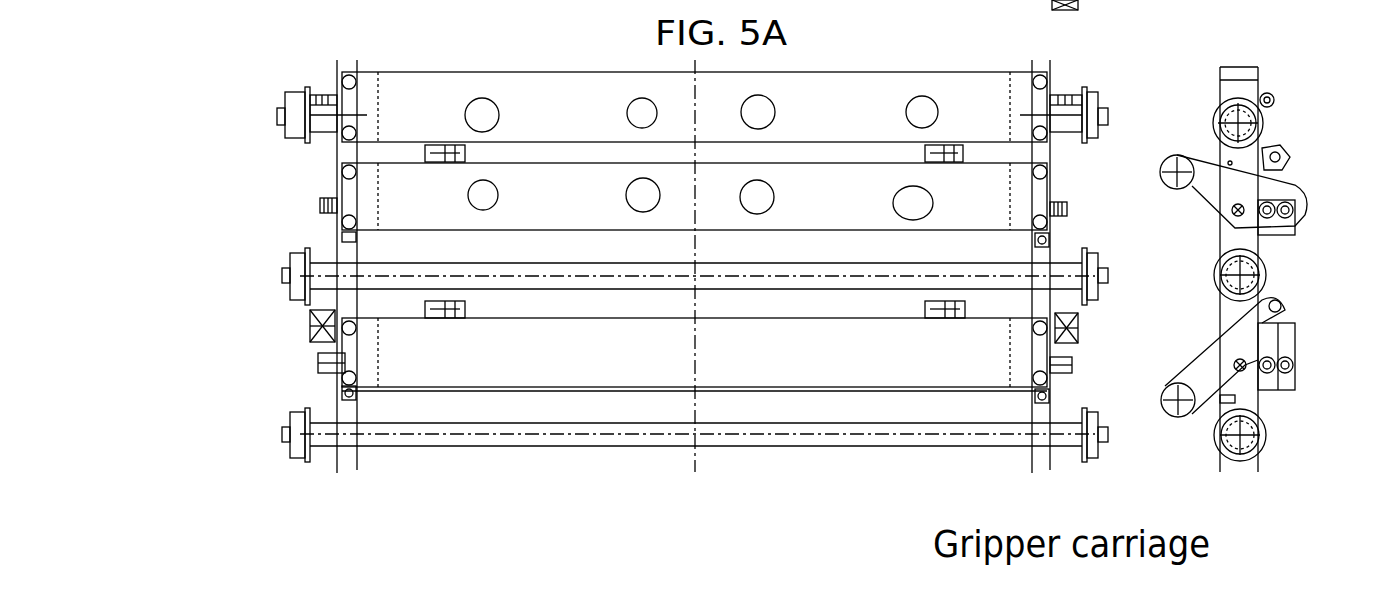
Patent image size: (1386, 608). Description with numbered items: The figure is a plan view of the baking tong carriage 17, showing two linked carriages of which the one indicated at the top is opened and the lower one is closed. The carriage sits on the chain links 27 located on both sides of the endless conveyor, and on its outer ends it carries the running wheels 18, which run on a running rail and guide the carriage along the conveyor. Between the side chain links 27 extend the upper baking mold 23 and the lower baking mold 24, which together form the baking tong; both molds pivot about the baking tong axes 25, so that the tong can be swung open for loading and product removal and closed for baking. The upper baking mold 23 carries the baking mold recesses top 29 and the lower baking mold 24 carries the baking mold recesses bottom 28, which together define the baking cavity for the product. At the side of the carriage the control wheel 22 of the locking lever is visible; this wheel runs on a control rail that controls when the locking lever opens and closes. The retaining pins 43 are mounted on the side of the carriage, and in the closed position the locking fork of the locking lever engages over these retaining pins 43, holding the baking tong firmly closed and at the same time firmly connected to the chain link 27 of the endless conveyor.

The baking tong carriage 17 is at (639, 260).
The running wheels 18 is at (1090, 110).
The control wheel 22 is at (1080, 10).
The upper baking mold 23 is at (812, 98).
The lower baking mold 24 is at (865, 193).
The baking tong axis 25 is at (453, 143).
The chain links 27 is at (337, 150).
The baking mold recesses bottom 28 is at (487, 195).
The baking mold recesses top 29 is at (640, 113).
The retaining pin 43 is at (1060, 102).